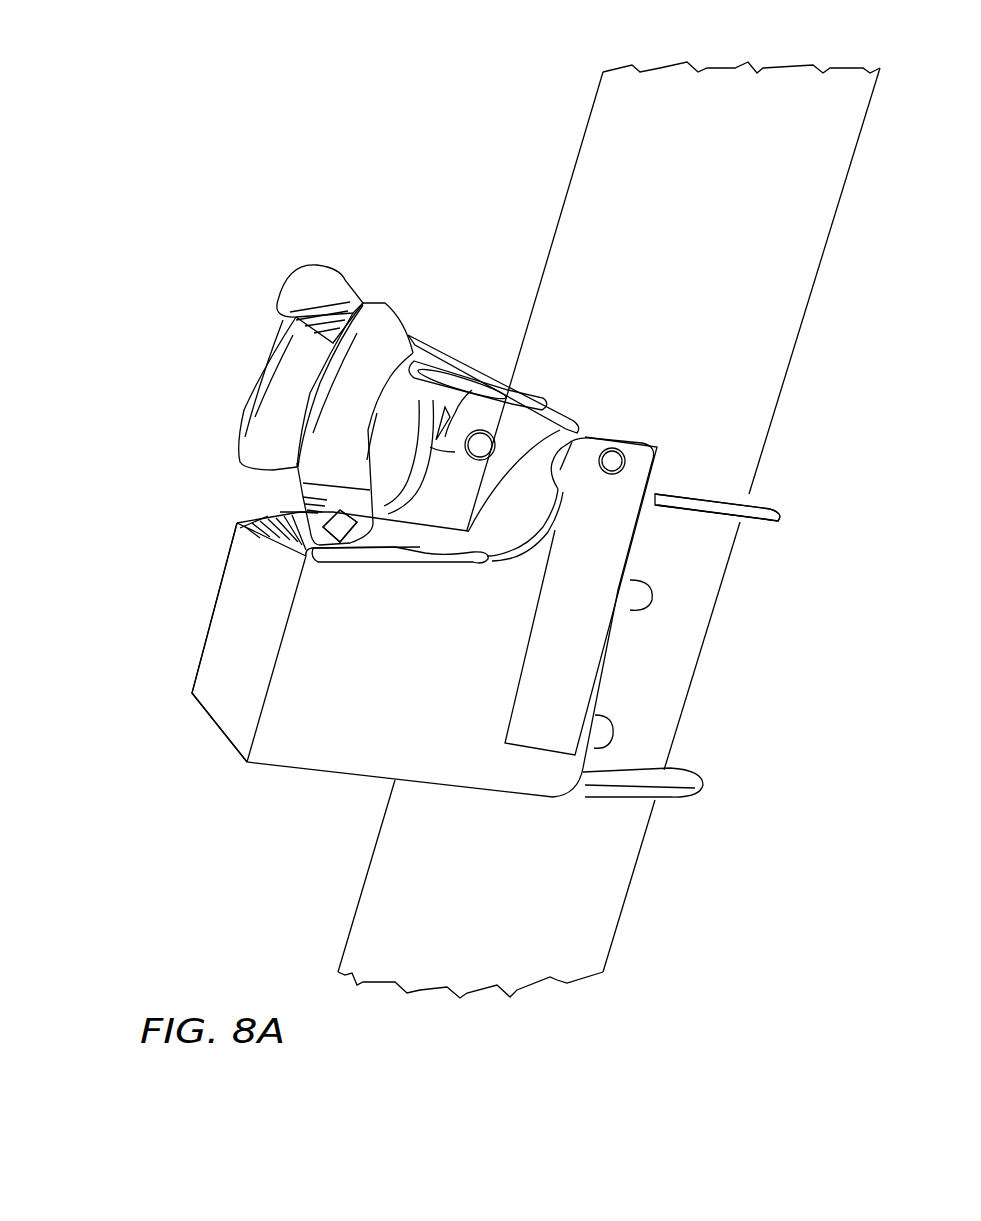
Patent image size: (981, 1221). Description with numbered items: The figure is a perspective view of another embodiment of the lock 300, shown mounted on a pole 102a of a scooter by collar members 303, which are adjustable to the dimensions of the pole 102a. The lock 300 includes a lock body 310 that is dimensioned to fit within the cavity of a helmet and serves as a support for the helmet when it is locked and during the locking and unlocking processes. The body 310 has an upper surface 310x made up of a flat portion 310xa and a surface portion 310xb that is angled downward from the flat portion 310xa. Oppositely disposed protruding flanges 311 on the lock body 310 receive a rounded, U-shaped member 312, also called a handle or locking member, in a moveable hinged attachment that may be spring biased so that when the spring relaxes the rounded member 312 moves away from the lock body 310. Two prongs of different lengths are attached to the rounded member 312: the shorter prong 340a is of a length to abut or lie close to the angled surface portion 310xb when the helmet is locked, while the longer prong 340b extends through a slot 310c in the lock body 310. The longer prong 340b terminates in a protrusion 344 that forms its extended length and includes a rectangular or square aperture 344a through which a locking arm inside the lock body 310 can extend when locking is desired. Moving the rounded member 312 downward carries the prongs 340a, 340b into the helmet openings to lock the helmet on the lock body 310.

The pole 102a is at (722, 276).
The lock 300 is at (204, 587).
The lock body 310 is at (196, 659).
The slot 310c is at (292, 540).
The upper surface 310x is at (276, 509).
The flat portion 310xa is at (470, 532).
The surface portion 310xb is at (268, 518).
The protruding flanges 311 is at (497, 410).
The rounded member 312 is at (444, 328).
The shorter prong 340a is at (268, 368).
The longer prong 340b is at (392, 407).
The protrusion 344 is at (386, 496).
The aperture 344a is at (330, 522).
The collar members 303 is at (763, 530).